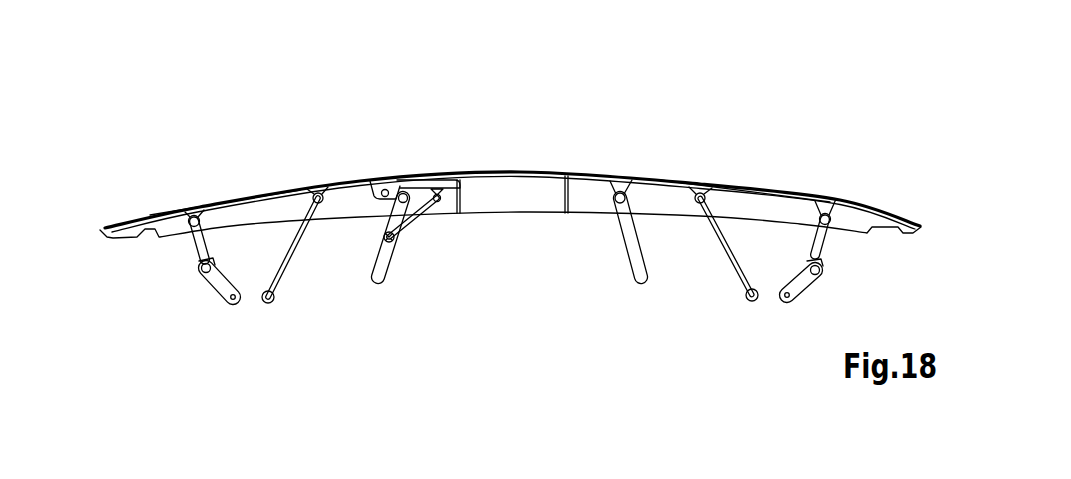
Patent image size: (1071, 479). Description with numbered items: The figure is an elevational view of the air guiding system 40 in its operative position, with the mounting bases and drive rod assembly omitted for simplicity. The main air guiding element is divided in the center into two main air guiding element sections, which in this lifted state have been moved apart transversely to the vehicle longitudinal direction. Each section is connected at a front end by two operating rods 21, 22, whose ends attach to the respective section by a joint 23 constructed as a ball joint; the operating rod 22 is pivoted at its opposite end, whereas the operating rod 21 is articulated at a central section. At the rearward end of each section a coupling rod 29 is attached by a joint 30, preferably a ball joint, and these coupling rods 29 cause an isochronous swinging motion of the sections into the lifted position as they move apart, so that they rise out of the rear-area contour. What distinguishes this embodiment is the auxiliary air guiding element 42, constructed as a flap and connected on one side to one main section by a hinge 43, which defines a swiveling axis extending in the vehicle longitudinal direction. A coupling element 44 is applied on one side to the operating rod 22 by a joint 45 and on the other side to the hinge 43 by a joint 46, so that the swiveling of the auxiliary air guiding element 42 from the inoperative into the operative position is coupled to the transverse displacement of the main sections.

The air guiding system 40 is at (478, 98).
The operating rod 21 is at (218, 290).
The operating rod 22 is at (378, 280).
The joint 23 is at (194, 212).
The coupling rod 29 is at (289, 268).
The joint 30 is at (318, 188).
The auxiliary air guiding element 42 is at (533, 172).
The hinge 43 is at (397, 172).
The coupling element 44 is at (424, 210).
The joint 45 is at (395, 244).
The joint 46 is at (445, 204).